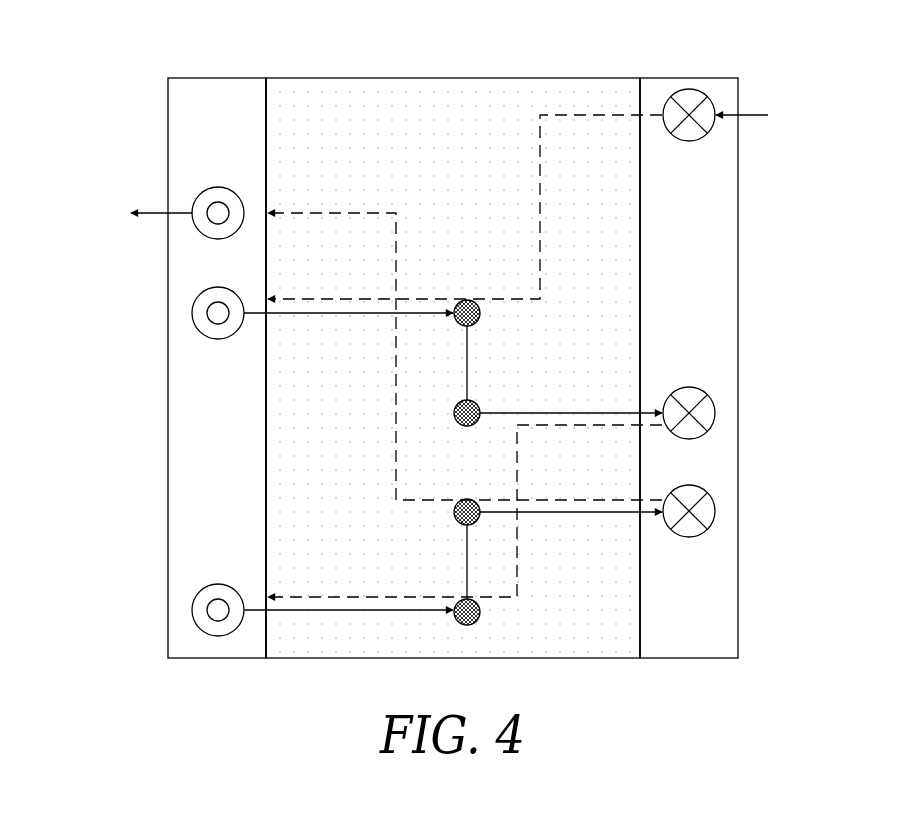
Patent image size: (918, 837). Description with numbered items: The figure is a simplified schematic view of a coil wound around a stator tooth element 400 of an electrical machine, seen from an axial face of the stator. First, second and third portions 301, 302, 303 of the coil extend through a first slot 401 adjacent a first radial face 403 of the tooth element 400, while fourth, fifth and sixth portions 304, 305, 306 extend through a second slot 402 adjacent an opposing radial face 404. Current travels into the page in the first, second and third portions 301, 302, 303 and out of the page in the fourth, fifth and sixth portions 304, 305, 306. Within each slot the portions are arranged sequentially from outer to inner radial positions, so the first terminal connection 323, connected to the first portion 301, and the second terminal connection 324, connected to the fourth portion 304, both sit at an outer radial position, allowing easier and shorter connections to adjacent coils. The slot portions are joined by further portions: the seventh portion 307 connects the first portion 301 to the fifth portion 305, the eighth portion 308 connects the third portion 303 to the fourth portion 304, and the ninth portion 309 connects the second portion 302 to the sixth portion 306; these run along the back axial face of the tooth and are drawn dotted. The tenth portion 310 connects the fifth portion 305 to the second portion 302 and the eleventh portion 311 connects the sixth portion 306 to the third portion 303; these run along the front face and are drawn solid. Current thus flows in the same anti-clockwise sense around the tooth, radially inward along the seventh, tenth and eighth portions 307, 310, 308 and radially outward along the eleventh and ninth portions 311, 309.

The first portion 301 is at (690, 89).
The second portion 302 is at (690, 387).
The third portion 303 is at (689, 537).
The fourth portion 304 is at (218, 239).
The fifth portion 305 is at (218, 340).
The sixth portion 306 is at (218, 584).
The seventh portion 307 is at (585, 115).
The eighth portion 308 is at (563, 425).
The ninth portion 309 is at (337, 213).
The tenth portion 310 is at (350, 314).
The eleventh portion 311 is at (540, 513).
The first terminal connection 323 is at (768, 114).
The second terminal connection 324 is at (163, 209).
The stator tooth element 400 is at (473, 146).
The first slot 401 is at (704, 227).
The second slot 402 is at (238, 126).
The first radial face 403 is at (640, 278).
The opposing radial face 404 is at (266, 437).